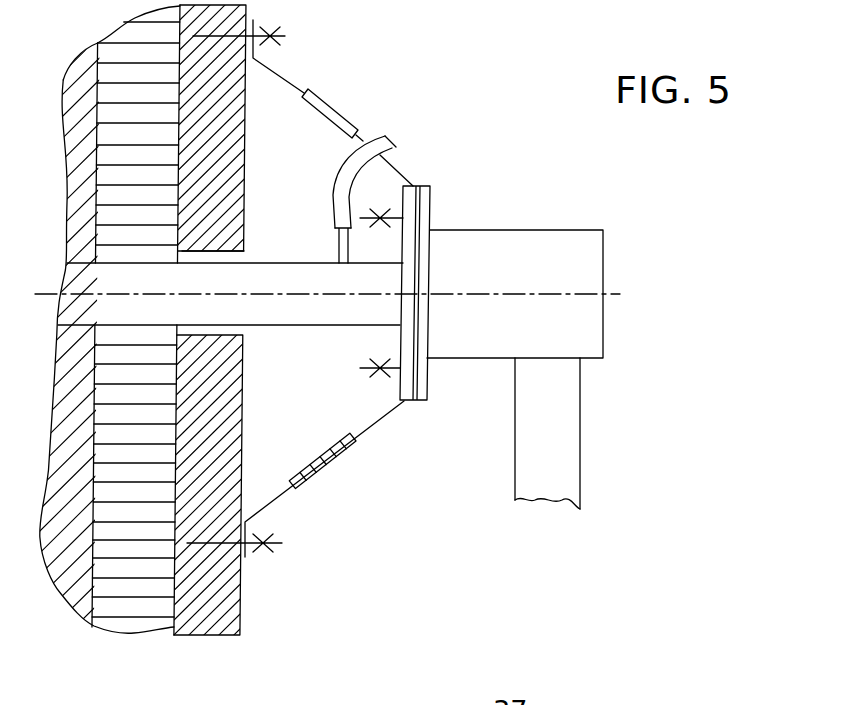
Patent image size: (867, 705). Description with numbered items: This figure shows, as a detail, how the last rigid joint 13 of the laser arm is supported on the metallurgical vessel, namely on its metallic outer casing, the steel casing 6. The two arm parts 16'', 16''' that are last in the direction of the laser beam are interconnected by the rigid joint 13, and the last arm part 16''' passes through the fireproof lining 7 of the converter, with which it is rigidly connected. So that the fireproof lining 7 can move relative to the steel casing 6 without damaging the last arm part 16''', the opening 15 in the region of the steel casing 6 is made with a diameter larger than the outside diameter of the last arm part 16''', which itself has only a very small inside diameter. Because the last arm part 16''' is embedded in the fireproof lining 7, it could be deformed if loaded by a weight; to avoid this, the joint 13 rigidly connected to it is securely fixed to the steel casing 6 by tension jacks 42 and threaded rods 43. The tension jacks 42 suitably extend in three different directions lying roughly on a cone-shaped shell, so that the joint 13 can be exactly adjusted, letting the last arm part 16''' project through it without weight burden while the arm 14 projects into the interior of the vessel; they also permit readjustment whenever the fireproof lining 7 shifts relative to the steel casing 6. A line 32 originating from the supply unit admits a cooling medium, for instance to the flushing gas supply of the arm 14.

The steel casing 6 is at (218, 602).
The fireproof lining 7 is at (117, 610).
The rigid joint 13 is at (565, 260).
The arm 14 is at (597, 501).
The opening 15 is at (240, 240).
The arm part 16'' is at (603, 433).
The last arm part 16''' is at (327, 336).
The line 32 is at (390, 142).
The tension jacks 42 is at (324, 118).
The threaded rods 43 is at (282, 77).